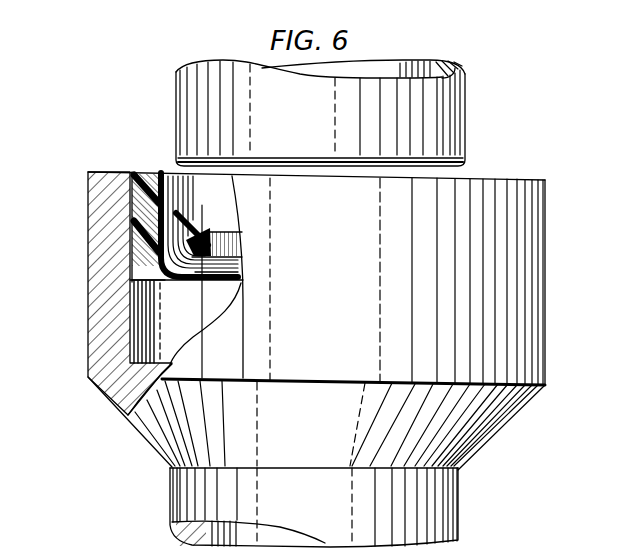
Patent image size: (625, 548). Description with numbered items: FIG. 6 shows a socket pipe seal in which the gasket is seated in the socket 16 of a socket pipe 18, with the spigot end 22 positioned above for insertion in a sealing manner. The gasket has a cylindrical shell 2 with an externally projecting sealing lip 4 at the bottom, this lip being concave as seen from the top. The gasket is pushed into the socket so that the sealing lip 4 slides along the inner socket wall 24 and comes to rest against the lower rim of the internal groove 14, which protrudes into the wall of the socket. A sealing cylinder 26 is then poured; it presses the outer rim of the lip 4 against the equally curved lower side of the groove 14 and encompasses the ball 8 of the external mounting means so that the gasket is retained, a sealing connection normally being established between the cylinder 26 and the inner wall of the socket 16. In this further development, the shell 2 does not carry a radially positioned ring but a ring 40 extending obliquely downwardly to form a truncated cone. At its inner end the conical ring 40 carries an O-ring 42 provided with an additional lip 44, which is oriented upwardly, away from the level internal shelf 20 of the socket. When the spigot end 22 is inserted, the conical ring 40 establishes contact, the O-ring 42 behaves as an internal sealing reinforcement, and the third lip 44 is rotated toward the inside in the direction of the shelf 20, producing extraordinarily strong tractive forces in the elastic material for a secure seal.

The cylindrical shell 2 is at (172, 189).
The sealing lip 4 is at (155, 282).
The ball 8 is at (138, 205).
The internal groove 14 is at (132, 266).
The socket 16 is at (103, 196).
The socket pipe 18 is at (188, 494).
The internal shelf 20 is at (167, 357).
The spigot end 22 is at (190, 90).
The socket wall 24 is at (133, 330).
The sealing cylinder 26 is at (140, 172).
The ring 40 is at (178, 223).
The O-ring 42 is at (205, 258).
The lip 44 is at (200, 233).